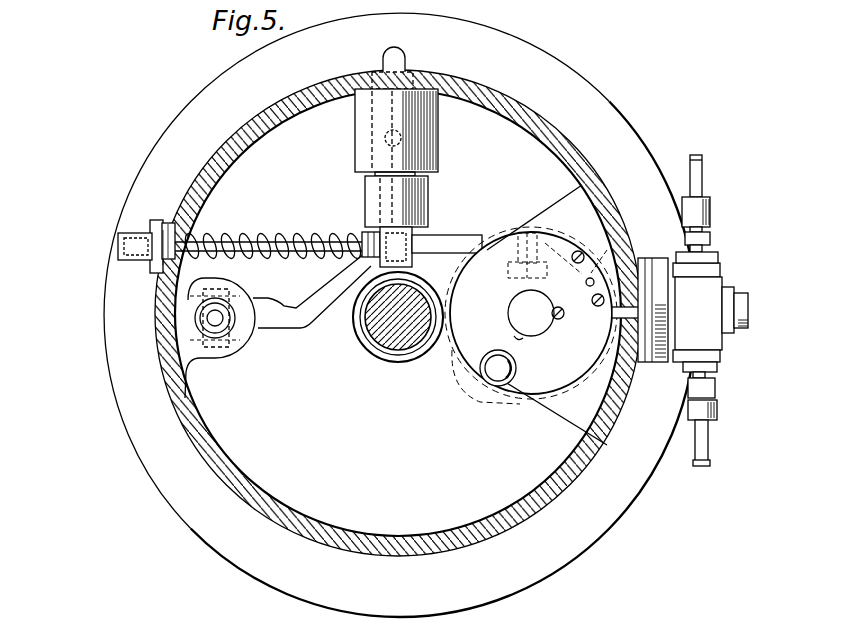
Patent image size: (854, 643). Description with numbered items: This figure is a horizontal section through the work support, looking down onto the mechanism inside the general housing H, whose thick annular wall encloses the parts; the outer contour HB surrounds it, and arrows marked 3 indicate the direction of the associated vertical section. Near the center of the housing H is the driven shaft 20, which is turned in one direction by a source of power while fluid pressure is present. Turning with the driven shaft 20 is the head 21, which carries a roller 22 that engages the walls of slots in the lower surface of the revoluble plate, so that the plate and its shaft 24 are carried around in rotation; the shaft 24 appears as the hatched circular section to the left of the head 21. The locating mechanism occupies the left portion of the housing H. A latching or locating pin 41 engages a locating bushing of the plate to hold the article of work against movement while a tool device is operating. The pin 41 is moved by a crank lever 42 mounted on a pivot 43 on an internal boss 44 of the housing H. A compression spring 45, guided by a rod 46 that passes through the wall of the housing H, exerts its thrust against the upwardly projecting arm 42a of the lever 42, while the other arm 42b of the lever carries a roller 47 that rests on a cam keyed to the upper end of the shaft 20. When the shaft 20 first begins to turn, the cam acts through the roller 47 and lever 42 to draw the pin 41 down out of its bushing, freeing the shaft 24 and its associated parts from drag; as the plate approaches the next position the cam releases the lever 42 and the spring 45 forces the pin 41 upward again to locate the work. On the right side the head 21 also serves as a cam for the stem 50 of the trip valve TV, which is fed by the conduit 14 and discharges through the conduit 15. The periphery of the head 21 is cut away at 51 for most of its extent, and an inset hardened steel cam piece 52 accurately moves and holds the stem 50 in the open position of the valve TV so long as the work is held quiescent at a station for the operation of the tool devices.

The housing H is at (555, 146).
The housing body HB is at (611, 510).
The section line indicator 3 is at (92, 318).
The conduit 14 is at (703, 176).
The conduit 15 is at (708, 448).
The trip valve TV is at (716, 290).
The driven shaft 20 is at (536, 315).
The head 21 is at (531, 315).
The roller 22 is at (480, 367).
The shaft 24 is at (381, 333).
The latching or locating pin 41 is at (216, 322).
The crank lever 42 is at (315, 303).
The upwardly projecting arm 42a is at (408, 240).
The arm 42b is at (480, 233).
The pivot 43 is at (430, 158).
The internal boss 44 is at (438, 129).
The compression spring 45 is at (312, 233).
The rod 46 is at (241, 238).
The roller 47 is at (563, 245).
The stem 50 is at (627, 262).
The cut away 51 is at (505, 402).
The inset hardened steel cam piece 52 is at (625, 233).